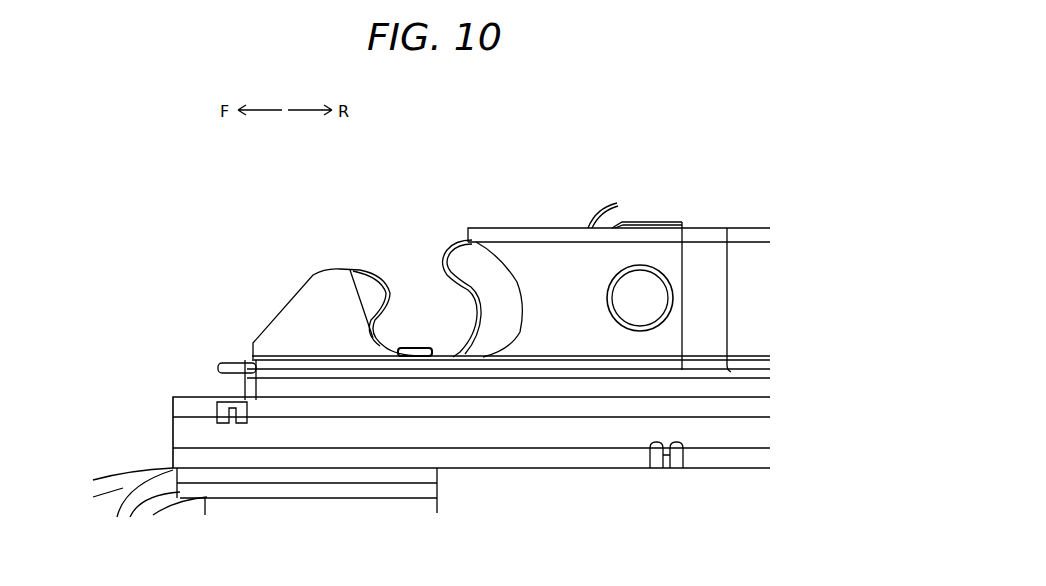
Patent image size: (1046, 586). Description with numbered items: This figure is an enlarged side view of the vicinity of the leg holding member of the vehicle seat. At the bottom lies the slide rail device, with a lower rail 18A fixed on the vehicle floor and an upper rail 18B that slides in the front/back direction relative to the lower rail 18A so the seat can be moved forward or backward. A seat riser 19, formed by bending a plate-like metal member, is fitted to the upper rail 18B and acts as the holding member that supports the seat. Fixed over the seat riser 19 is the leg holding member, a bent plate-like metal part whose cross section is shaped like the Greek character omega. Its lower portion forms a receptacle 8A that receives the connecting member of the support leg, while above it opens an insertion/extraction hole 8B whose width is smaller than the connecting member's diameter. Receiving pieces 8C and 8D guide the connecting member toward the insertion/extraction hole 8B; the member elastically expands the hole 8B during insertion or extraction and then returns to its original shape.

The receptacle 8A is at (470, 325).
The insertion/extraction hole 8B is at (417, 283).
The receiving piece 8C is at (460, 240).
The receiving piece 8D is at (360, 267).
The lower rail 18A is at (173, 430).
The upper rail 18B is at (265, 390).
The seat riser 19 is at (545, 250).